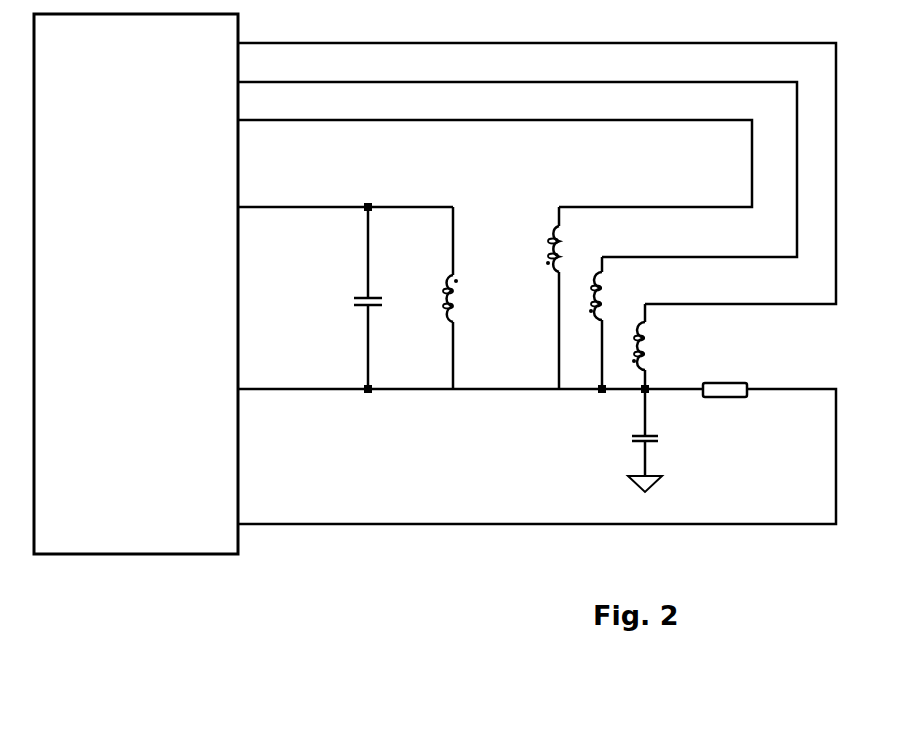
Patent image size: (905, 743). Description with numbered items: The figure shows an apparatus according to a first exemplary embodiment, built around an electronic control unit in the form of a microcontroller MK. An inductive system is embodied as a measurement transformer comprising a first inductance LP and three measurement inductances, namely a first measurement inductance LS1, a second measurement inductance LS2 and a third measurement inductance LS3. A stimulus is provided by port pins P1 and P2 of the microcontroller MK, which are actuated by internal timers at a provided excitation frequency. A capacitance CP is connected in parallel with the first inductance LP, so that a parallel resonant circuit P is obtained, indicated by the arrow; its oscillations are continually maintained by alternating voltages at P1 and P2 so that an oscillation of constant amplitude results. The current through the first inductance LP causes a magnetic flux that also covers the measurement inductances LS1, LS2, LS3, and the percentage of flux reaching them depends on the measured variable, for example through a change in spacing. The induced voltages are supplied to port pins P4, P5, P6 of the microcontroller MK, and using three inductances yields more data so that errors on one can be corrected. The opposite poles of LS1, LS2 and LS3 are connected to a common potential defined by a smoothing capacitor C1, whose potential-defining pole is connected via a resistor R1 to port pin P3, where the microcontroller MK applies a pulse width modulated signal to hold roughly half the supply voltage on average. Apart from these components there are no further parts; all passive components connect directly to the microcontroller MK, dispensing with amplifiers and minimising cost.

The microcontroller MK is at (136, 284).
The port pin P1 is at (345, 197).
The port pin P2 is at (470, 380).
The port pin P3 is at (537, 456).
The port pin P4 is at (495, 154).
The port pin P5 is at (517, 159).
The port pin P6 is at (537, 163).
The capacitance CP is at (358, 298).
The first inductance LP is at (435, 298).
The first measurement inductance LS1 is at (574, 298).
The second measurement inductance LS2 is at (617, 323).
The third measurement inductance LS3 is at (660, 346).
The resistor R1 is at (725, 380).
The smoothing capacitor C1 is at (638, 440).
The parallel resonant circuit P is at (445, 413).